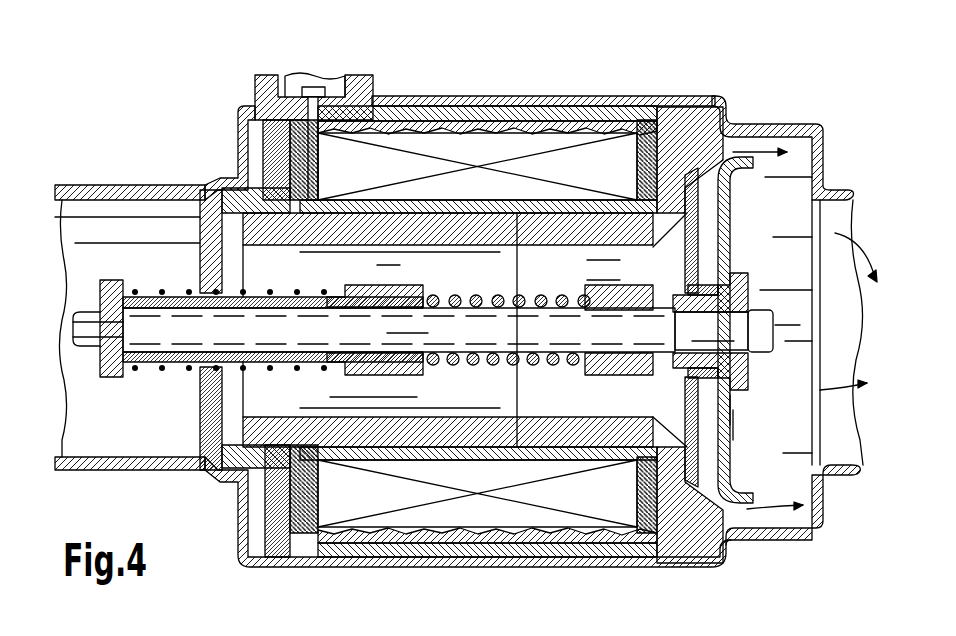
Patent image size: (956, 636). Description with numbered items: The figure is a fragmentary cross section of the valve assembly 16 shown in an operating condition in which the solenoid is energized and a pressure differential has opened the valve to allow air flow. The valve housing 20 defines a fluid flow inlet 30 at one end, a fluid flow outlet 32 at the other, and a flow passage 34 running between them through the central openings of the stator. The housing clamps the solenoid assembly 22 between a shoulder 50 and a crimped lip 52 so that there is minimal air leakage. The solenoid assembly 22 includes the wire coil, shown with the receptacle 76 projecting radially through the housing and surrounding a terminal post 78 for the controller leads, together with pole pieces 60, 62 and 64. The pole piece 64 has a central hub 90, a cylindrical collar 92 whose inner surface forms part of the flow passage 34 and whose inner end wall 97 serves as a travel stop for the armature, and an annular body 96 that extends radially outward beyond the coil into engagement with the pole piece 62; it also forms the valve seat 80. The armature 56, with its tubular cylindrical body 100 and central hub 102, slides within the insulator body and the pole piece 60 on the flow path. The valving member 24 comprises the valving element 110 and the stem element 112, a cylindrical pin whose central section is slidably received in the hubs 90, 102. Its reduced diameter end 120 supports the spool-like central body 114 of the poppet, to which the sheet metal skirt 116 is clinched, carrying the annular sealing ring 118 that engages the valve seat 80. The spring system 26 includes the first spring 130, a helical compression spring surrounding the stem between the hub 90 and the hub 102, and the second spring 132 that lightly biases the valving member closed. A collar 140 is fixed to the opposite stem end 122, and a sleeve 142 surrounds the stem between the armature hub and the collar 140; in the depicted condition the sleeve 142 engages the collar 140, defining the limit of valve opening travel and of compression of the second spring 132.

The valve assembly 16 is at (520, 50).
The valve housing 20 is at (570, 93).
The solenoid assembly 22 is at (580, 505).
The valving member 24 is at (760, 378).
The spring system 26 is at (216, 290).
The fluid flow inlet 30 is at (77, 262).
The fluid flow outlet 32 is at (833, 233).
The flow passage 34 is at (272, 398).
The shoulder 50 is at (733, 548).
The lip 52 is at (243, 558).
The armature 56 is at (238, 398).
The pole piece 60 is at (235, 182).
The pole piece 62 is at (438, 96).
The pole piece 64 is at (683, 135).
The receptacle 76 is at (266, 74).
The terminal post 78 is at (307, 73).
The valve seat 80 is at (727, 187).
The central hub 90 is at (613, 367).
The cylindrical collar 92 is at (560, 433).
The annular body 96 is at (700, 540).
The inner end wall 97 is at (512, 230).
The tubular cylindrical body 100 is at (275, 232).
The hub 102 is at (404, 292).
The valving element 110 is at (745, 423).
The stem element 112 is at (399, 330).
The central body 114 is at (750, 302).
The skirt 116 is at (732, 410).
The annular sealing ring 118 is at (718, 482).
The reduced diameter end 120 is at (711, 331).
The reduced diameter end 122 is at (62, 319).
The first spring 130 is at (447, 368).
The second spring 132 is at (186, 368).
The collar 140 is at (66, 349).
The sleeve 142 is at (155, 368).